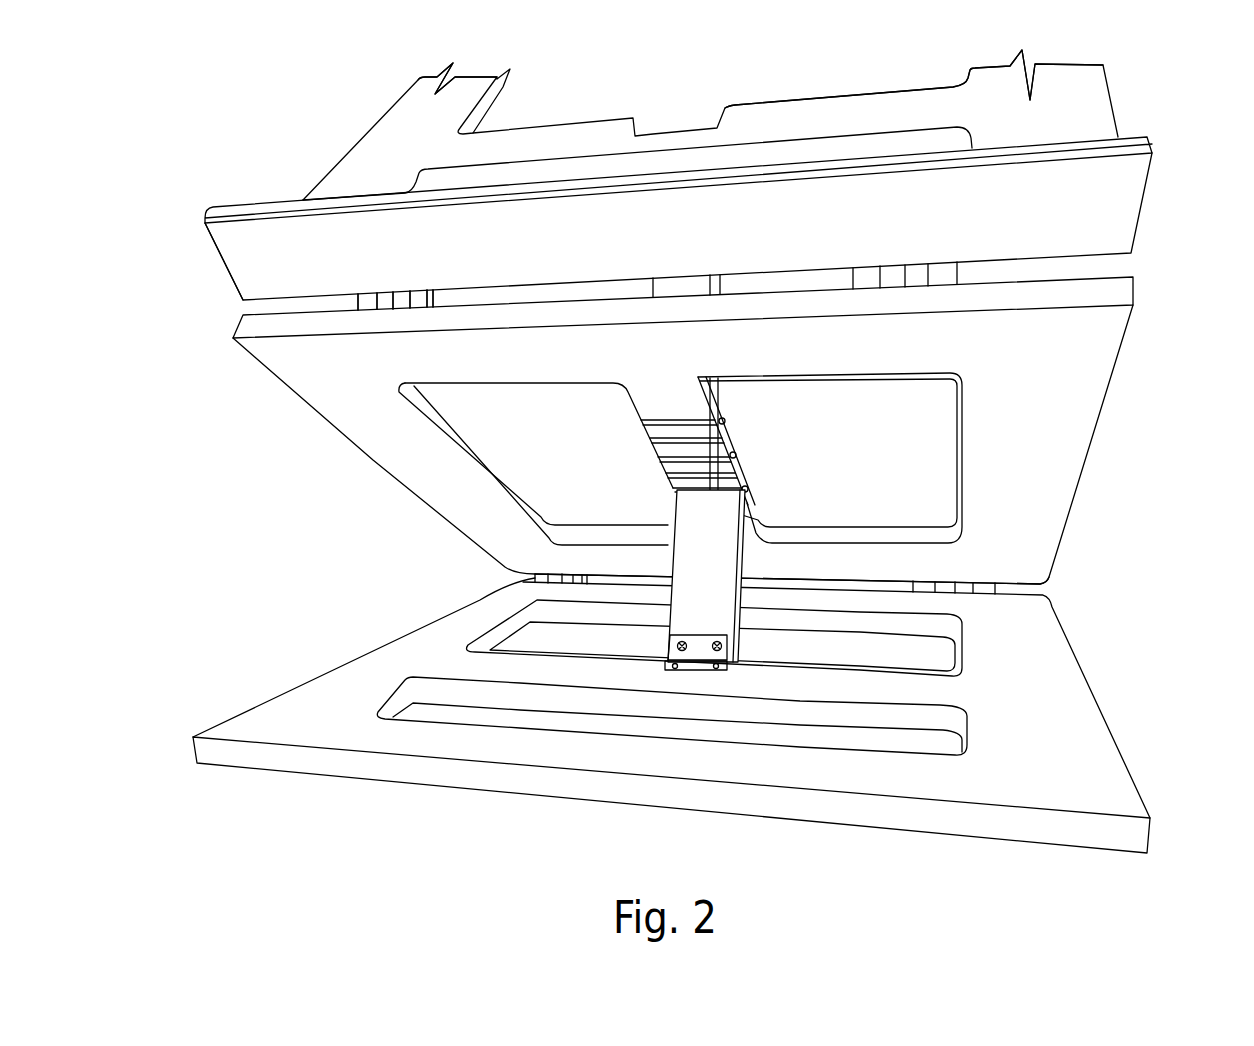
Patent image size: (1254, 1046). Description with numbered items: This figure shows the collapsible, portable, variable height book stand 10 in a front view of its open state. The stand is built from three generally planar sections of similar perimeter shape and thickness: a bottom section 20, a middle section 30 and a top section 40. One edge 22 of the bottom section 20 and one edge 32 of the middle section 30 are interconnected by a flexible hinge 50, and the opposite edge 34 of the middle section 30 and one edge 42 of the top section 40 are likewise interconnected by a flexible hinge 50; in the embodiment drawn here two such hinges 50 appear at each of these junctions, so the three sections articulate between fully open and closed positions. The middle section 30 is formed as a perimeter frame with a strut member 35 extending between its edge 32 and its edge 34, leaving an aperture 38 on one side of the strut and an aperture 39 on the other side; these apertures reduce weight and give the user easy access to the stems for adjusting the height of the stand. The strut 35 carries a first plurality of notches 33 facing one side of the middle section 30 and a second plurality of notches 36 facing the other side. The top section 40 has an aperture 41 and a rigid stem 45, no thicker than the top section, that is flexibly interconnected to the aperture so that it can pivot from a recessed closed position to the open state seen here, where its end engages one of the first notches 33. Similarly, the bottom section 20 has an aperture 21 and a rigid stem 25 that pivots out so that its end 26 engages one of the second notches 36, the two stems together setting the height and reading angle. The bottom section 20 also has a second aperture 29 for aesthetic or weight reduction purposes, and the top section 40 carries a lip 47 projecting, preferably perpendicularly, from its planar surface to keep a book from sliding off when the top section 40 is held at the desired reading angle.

The book stand 10 is at (886, 896).
The bottom section 20 is at (1097, 773).
The bottom section aperture 21 is at (588, 651).
The edge of the bottom section 22 is at (1047, 595).
The rigid stem 25 is at (737, 618).
The end of the stem 26 is at (750, 493).
The second aperture 29 is at (718, 730).
The middle section 30 is at (1093, 362).
The edge of the middle section 32 is at (1047, 583).
The first plurality of notches 33 is at (718, 422).
The opposite edge of the middle section 34 is at (1113, 288).
The strut member 35 is at (728, 457).
The second plurality of notches 36 is at (619, 418).
The aperture 38 is at (541, 450).
The aperture 39 is at (893, 480).
The top section 40 is at (1122, 120).
The aperture 41 is at (561, 115).
The edge of the top section 42 is at (1113, 230).
The rigid stem 45 is at (410, 297).
The lip 47 is at (213, 247).
The flexible hinge 50 is at (353, 297).